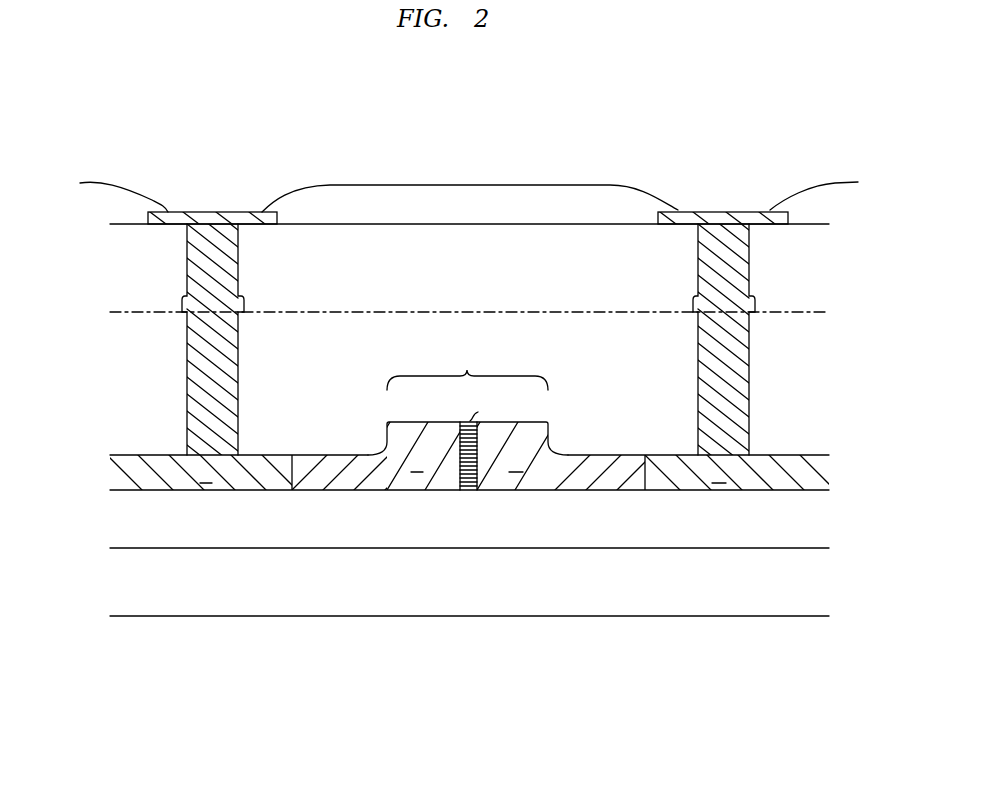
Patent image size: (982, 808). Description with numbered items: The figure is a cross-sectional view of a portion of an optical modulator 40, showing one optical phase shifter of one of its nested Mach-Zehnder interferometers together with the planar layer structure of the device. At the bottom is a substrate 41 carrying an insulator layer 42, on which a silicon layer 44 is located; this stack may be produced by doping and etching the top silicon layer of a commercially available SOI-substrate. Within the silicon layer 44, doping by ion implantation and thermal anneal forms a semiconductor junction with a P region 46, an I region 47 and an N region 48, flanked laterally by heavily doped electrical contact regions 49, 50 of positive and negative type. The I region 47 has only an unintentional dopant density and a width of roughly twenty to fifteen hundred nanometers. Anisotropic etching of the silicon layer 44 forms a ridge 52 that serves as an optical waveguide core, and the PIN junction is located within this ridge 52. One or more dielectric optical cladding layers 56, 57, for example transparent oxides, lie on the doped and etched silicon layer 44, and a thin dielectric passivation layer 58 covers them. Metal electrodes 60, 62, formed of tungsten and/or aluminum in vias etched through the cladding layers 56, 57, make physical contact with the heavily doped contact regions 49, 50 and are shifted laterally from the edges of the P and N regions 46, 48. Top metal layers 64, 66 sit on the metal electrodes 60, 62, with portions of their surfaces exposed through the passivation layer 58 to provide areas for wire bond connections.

The optical modulator 40 is at (622, 661).
The substrate 41 is at (239, 590).
The insulator layer 42 is at (239, 531).
The silicon layer 44 is at (102, 478).
The P region 46 is at (385, 493).
The I region 47 is at (467, 493).
The N region 48 is at (583, 493).
The P+ electrical contact region 49 is at (150, 493).
The N+ electrical contact region 50 is at (753, 493).
The ridge 52 is at (468, 398).
The dielectric optical cladding layer 56 is at (330, 380).
The dielectric optical cladding layer 57 is at (482, 277).
The dielectric passivation layer 58 is at (112, 189).
The metal electrode 60 is at (240, 275).
The metal electrode 62 is at (750, 275).
The top metal layer 64 is at (216, 211).
The top metal layer 66 is at (726, 211).